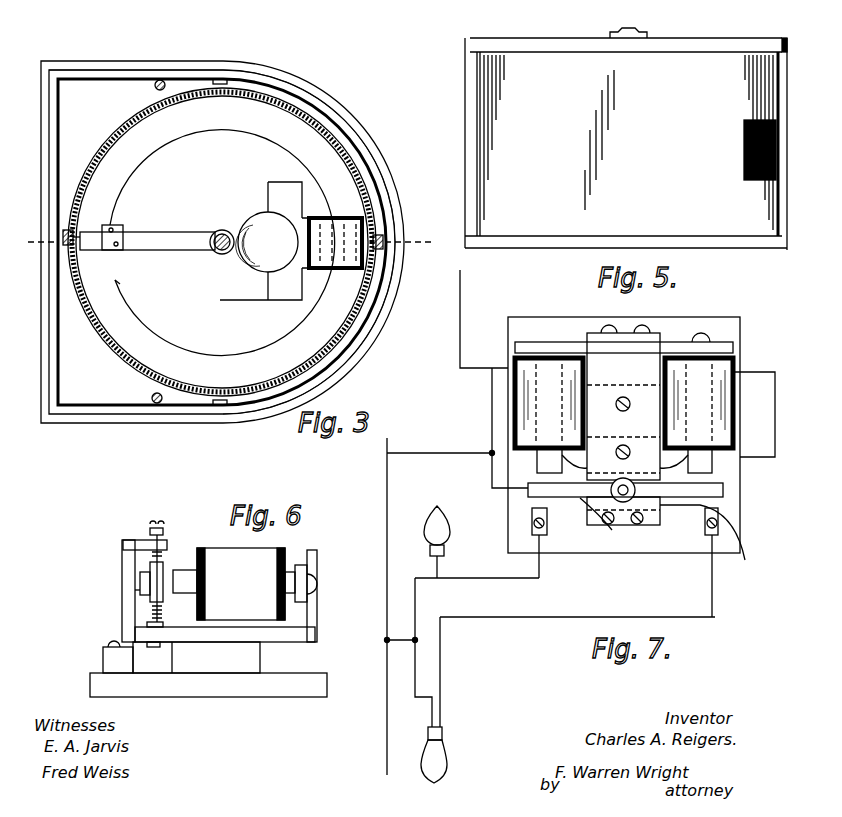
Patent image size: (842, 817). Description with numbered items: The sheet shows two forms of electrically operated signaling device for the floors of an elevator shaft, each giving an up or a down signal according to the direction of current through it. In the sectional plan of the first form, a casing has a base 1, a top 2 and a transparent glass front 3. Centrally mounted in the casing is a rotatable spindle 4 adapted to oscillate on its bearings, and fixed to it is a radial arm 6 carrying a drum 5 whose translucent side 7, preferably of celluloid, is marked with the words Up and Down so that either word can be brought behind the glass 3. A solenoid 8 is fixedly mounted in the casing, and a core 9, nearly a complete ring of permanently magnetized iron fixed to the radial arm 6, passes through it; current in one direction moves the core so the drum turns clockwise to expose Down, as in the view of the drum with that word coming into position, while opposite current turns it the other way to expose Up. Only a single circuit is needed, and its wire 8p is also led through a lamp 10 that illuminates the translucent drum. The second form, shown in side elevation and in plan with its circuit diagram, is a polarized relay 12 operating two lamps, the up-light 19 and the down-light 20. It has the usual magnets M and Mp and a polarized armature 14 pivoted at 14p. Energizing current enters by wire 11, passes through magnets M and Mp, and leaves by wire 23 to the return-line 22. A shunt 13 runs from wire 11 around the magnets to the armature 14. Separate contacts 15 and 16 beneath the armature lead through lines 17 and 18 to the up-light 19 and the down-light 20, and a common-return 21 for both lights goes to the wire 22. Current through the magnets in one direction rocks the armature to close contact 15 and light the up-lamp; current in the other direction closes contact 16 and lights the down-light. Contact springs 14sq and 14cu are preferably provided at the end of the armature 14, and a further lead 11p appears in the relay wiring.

In FIG. 3, the base 1 is at (178, 62).
In FIG. 3, the top 2 is at (223, 253).
In FIG. 3, the transparent glass front 3 is at (373, 169).
In FIG. 3, the rotatable spindle 4 is at (220, 255).
In FIG. 3, the drum 5 is at (112, 148).
In FIG. 5, the drum 5 is at (728, 40).
In FIG. 3, the radial arm 6 is at (193, 232).
In FIG. 5, the translucent side 7 is at (713, 135).
In FIG. 3, the solenoid 8 is at (363, 234).
In FIG. 3, the wire 8p is at (268, 186).
In FIG. 3, the core 9 is at (160, 152).
In FIG. 3, the lamp 10 is at (249, 228).
In FIG. 7, the wire 11 is at (460, 331).
In FIG. 7, the wire 11p is at (650, 530).
In FIG. 7, the polarized relay 12 is at (628, 530).
In FIG. 6, the polarized relay 12 is at (208, 669).
In FIG. 7, the shunt 13 is at (492, 403).
In FIG. 7, the polarized armature 14 is at (723, 491).
In FIG. 6, the polarized armature 14 is at (161, 576).
In FIG. 6, the pivot 14p is at (150, 558).
In FIG. 7, the contact spring 14sq is at (556, 500).
In FIG. 7, the contact spring 14cu is at (744, 558).
In FIG. 7, the contact 15 is at (554, 543).
In FIG. 7, the contact 16 is at (705, 530).
In FIG. 6, the contact 16 is at (135, 601).
In FIG. 7, the line 17 is at (498, 580).
In FIG. 7, the line 18 is at (540, 617).
In FIG. 7, the up-light 19 is at (446, 528).
In FIG. 7, the down-light 20 is at (445, 758).
In FIG. 7, the common-return 21 is at (417, 618).
In FIG. 7, the return-line 22 is at (387, 597).
In FIG. 7, the wire 23 is at (760, 458).
In FIG. 7, the magnet M is at (624, 399).
In FIG. 6, the magnet Mp is at (219, 591).